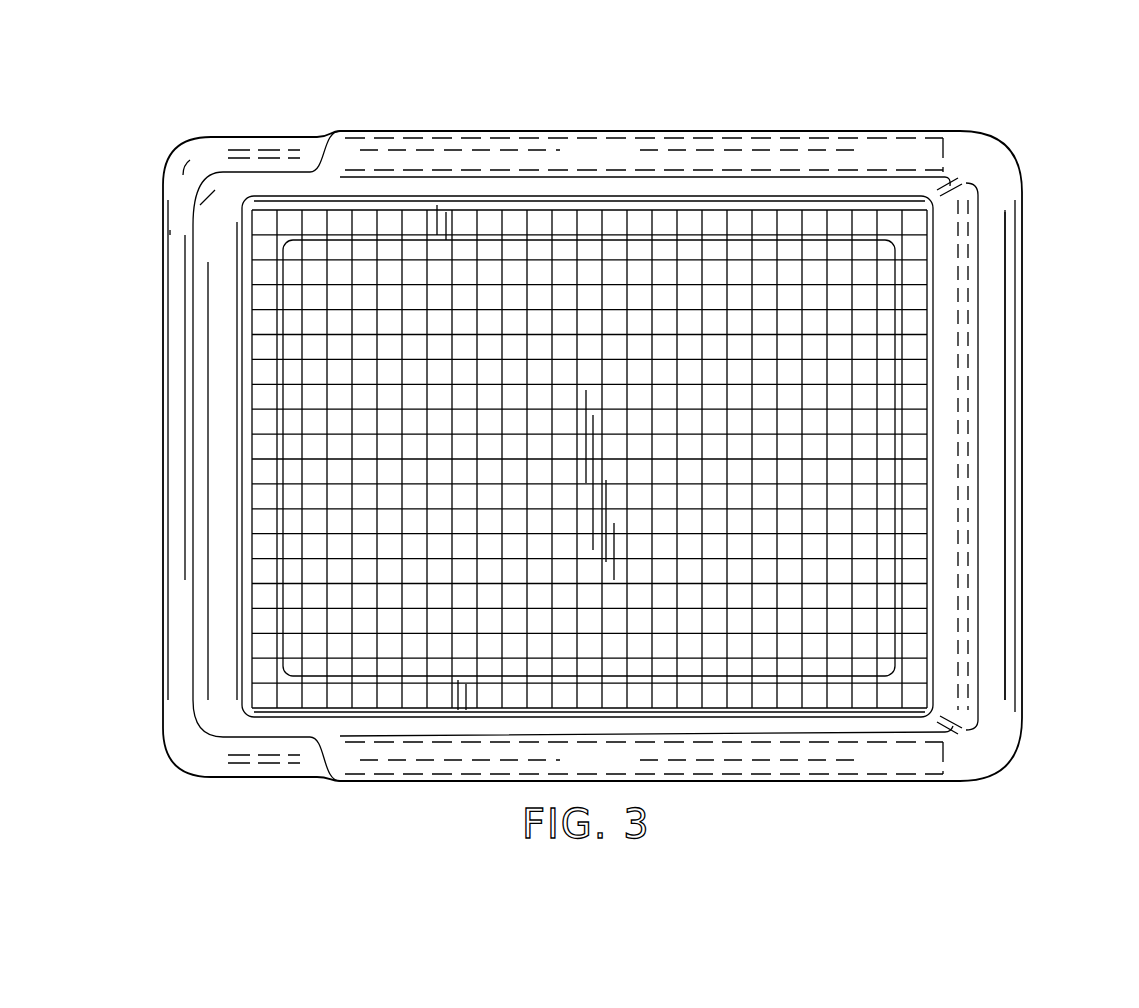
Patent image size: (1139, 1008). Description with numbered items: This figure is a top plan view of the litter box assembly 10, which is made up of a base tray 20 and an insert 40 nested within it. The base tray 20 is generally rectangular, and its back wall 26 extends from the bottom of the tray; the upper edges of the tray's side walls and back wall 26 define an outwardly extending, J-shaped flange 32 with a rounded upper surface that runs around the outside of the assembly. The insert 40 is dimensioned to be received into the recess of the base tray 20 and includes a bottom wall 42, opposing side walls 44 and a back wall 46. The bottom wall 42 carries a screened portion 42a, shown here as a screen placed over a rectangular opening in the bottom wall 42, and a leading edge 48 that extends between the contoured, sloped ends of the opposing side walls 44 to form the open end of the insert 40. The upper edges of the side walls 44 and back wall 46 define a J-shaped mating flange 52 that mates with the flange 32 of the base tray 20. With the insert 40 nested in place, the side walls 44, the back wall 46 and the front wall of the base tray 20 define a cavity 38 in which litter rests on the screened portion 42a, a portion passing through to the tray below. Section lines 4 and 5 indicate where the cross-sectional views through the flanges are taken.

The litter box assembly 10 is at (1006, 79).
The base tray 20 is at (150, 267).
The back wall 26 is at (215, 345).
The flange 32 is at (248, 155).
The cavity 38 is at (817, 217).
The insert 40 is at (1038, 234).
The bottom wall 42 is at (516, 218).
The screened portion 42a is at (825, 352).
The opposing side walls 44 is at (690, 190).
The back wall 46 is at (949, 596).
The leading edge 48 is at (240, 497).
The mating flange 52 is at (584, 152).
The section line 4- 4 is at (150, 447).
The section line 5- 5 is at (763, 123).